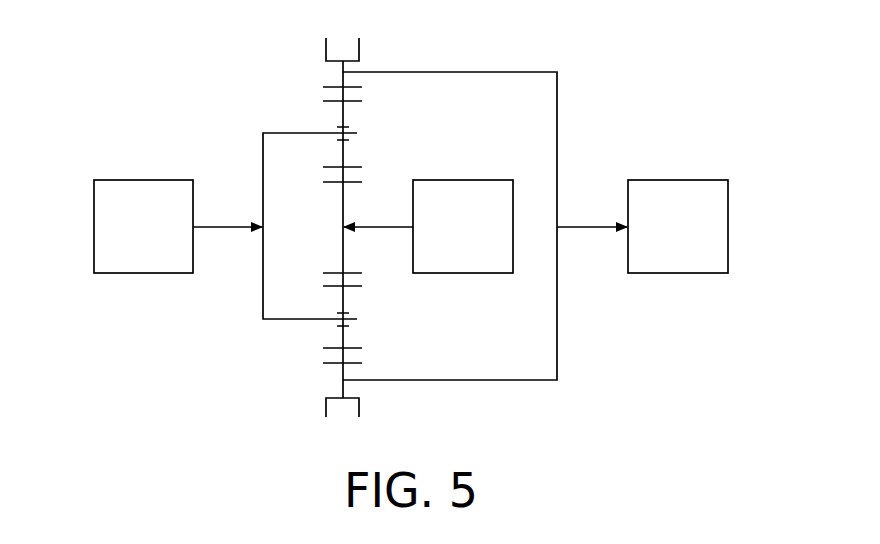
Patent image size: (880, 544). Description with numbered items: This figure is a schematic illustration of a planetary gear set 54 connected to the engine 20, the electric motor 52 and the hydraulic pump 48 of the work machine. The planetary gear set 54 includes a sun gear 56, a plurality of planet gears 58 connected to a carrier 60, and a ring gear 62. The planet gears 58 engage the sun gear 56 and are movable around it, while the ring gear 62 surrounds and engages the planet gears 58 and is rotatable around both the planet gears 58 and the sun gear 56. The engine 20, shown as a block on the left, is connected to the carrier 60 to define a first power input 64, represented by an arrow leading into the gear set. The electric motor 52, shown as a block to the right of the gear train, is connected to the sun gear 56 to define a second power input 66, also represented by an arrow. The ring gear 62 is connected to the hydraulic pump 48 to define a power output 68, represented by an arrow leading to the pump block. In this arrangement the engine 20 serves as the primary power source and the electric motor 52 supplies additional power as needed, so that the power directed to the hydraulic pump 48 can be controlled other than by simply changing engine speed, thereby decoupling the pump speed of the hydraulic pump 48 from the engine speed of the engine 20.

The engine 20 is at (128, 240).
The hydraulic pump 48 is at (663, 240).
The electric motor 52 is at (448, 240).
The planetary gear set 54 is at (261, 145).
The sun gear 56 is at (346, 211).
The planet gears 58 is at (346, 153).
The carrier 60 is at (285, 320).
The ring gear 62 is at (340, 80).
The first power input 64 is at (230, 228).
The second power input 66 is at (373, 229).
The power output 68 is at (590, 226).